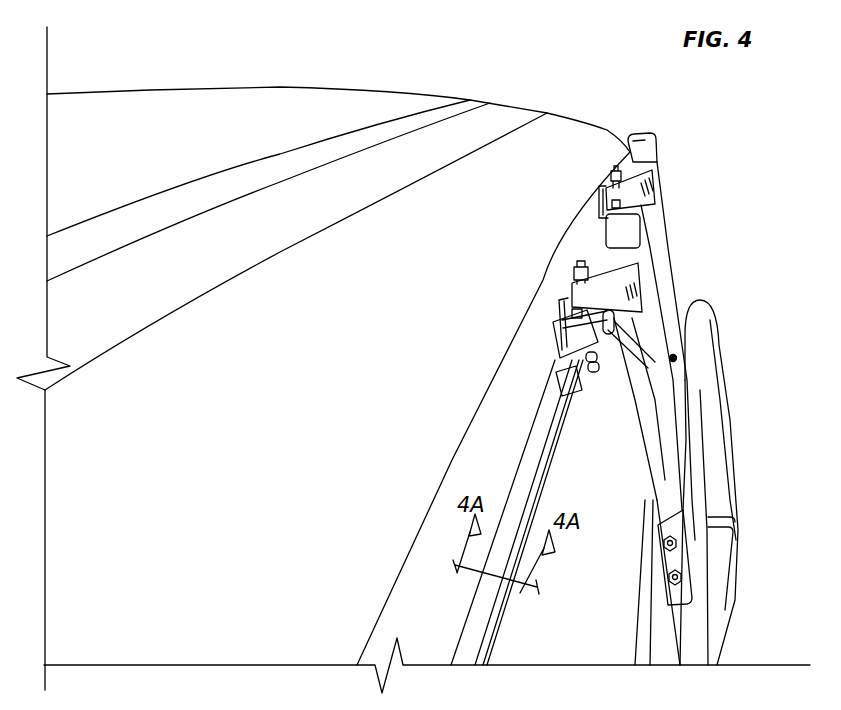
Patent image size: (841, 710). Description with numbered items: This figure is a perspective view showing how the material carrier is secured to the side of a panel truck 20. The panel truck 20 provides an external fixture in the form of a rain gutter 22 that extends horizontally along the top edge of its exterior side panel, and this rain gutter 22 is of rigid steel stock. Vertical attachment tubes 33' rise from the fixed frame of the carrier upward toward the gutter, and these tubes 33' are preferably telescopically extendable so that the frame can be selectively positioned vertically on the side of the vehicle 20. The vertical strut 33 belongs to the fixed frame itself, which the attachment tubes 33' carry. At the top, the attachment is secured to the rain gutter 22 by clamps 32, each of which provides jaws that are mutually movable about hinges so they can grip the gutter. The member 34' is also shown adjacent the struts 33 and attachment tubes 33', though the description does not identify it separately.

The panel truck 20 is at (575, 117).
The rain gutter 22 is at (517, 500).
The clamp 32 is at (549, 315).
The vertical strut 33 is at (721, 527).
The vertical attachment tube 33' is at (656, 399).
The brace 34' is at (740, 482).